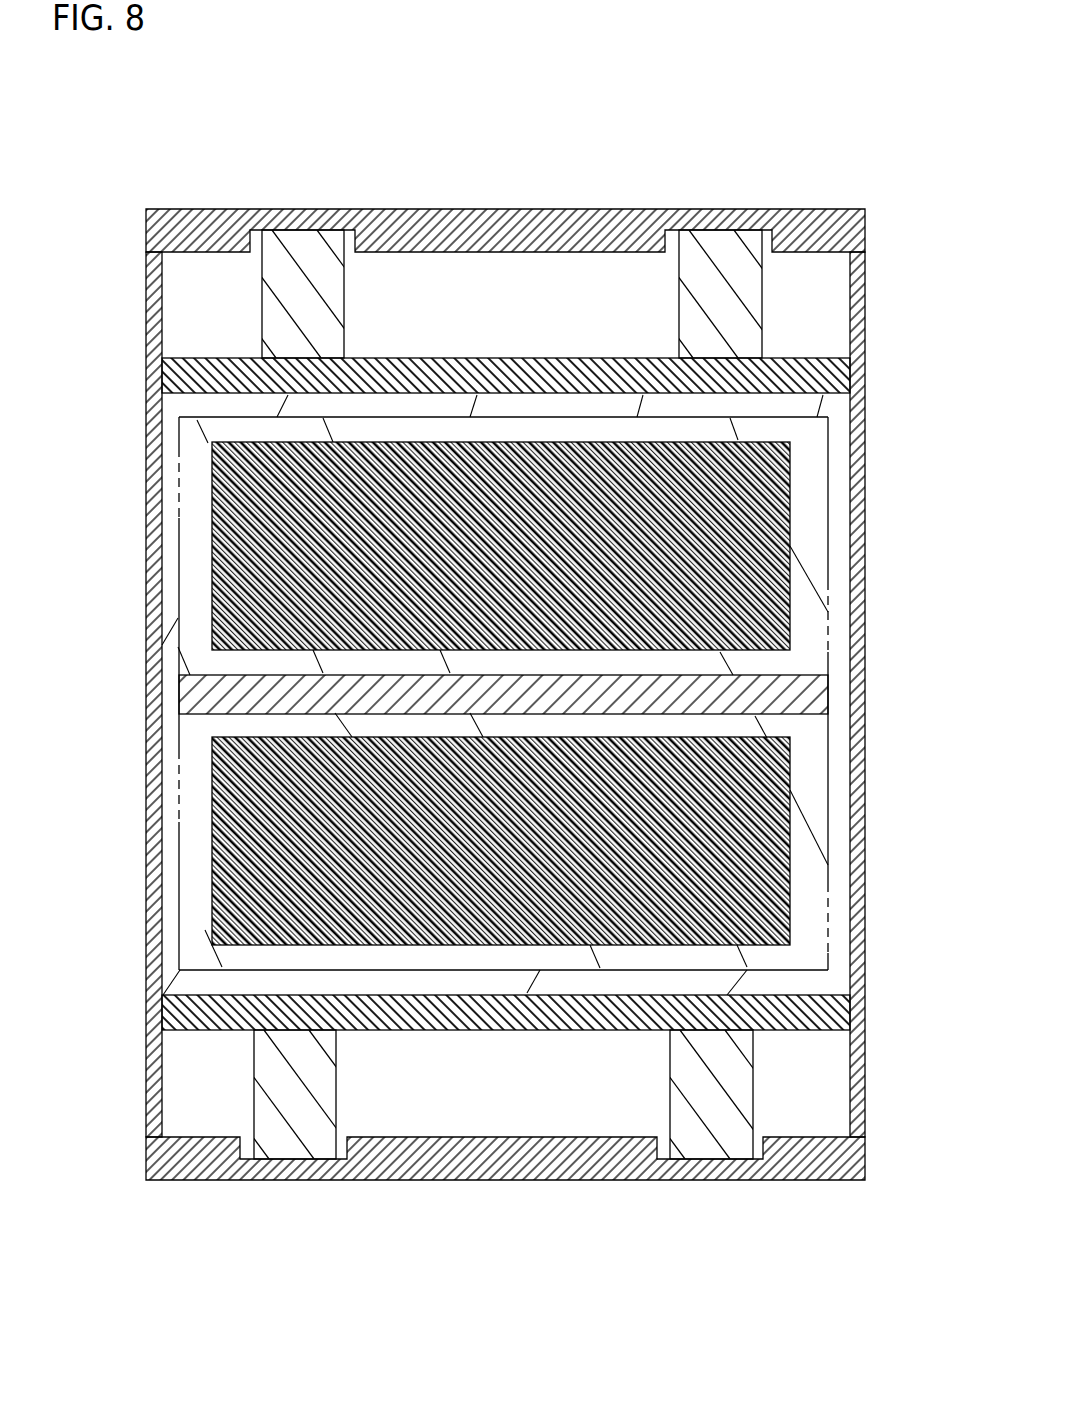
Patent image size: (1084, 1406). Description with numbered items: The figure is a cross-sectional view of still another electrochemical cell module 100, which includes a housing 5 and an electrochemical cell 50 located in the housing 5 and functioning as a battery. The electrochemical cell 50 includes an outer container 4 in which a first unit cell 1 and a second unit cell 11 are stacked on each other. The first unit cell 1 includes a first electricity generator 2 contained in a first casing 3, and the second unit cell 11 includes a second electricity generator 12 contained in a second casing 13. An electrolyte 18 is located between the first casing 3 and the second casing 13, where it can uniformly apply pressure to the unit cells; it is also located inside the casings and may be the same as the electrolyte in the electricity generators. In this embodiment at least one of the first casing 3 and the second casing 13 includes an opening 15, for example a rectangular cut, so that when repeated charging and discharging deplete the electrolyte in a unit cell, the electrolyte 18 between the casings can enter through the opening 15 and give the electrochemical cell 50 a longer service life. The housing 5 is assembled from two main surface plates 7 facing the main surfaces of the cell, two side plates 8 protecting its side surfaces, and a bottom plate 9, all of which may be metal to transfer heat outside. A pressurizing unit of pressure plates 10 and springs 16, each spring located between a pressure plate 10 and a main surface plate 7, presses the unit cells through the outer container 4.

The electrochemical cell module 100 is at (168, 170).
The first unit cell 1 is at (523, 435).
The first electricity generator 2 is at (580, 442).
The first casing 3 is at (432, 428).
The outer container 4 is at (210, 410).
The housing 5 is at (866, 495).
The main surface plates 7 is at (637, 210).
The side plates 8 is at (865, 392).
The bottom plate 9 is at (813, 302).
The pressure plates 10 is at (482, 442).
The second unit cell 11 is at (503, 957).
The second electricity generator 12 is at (470, 897).
The second casing 13 is at (562, 958).
The opening 15 is at (177, 492).
The springs 16 is at (301, 250).
The electrolyte 18 is at (787, 695).
The electrochemical cell 50 is at (843, 822).